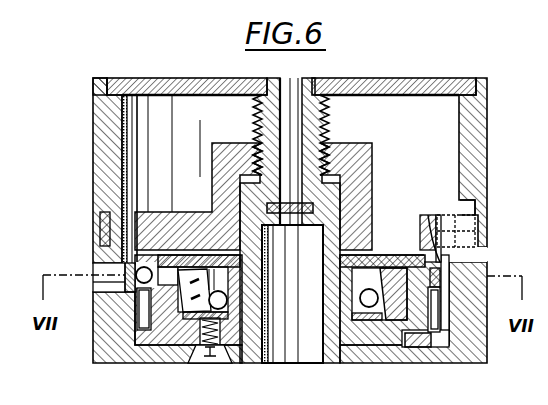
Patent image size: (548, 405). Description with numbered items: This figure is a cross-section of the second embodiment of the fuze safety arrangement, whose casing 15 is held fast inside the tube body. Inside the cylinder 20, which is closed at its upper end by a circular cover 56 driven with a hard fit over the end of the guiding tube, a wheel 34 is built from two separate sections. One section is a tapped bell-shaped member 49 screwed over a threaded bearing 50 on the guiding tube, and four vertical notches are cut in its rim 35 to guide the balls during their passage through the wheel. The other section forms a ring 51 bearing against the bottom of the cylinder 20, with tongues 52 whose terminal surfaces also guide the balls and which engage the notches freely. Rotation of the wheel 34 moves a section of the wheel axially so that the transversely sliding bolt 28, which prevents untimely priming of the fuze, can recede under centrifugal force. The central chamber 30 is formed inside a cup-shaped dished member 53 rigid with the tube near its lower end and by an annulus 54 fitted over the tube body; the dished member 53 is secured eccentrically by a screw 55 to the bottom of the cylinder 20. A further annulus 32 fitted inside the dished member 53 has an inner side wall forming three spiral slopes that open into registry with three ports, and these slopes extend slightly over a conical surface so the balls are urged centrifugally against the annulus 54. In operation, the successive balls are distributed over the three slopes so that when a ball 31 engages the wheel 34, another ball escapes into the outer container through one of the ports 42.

The casing 15 is at (108, 70).
The circular cover 56 is at (173, 80).
The cylinder 20 is at (106, 115).
The tapped bell-shaped member 49 is at (226, 150).
The threaded bearing 50 is at (329, 114).
The wheel 34 is at (397, 205).
The annulus 54 is at (394, 236).
The rim 35 is at (147, 243).
The port 42 is at (101, 284).
The transversely sliding bolt 28 is at (294, 227).
The ball 31 is at (237, 296).
The dished member 53 is at (393, 296).
The tongue 52 is at (437, 305).
The central chamber 30 is at (357, 298).
The annulus 32 is at (377, 318).
The ring 51 is at (432, 341).
The screw 55 is at (199, 364).